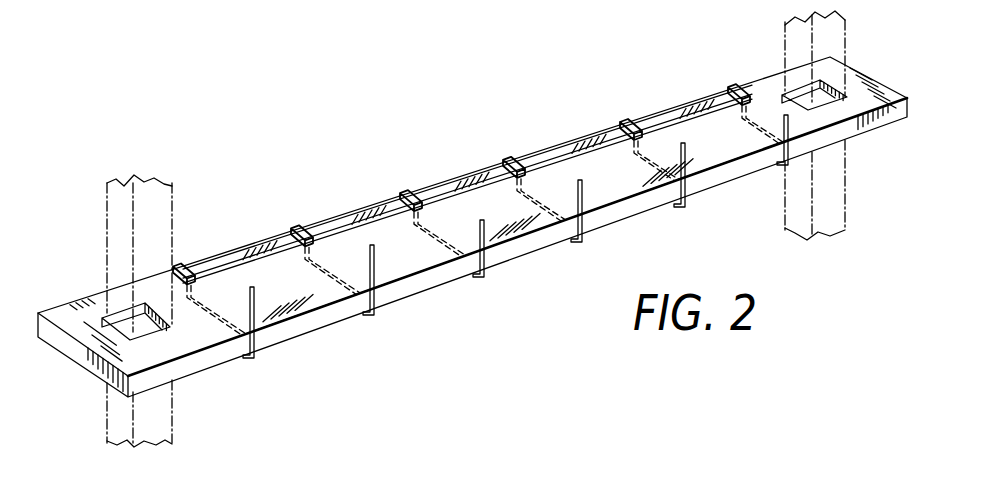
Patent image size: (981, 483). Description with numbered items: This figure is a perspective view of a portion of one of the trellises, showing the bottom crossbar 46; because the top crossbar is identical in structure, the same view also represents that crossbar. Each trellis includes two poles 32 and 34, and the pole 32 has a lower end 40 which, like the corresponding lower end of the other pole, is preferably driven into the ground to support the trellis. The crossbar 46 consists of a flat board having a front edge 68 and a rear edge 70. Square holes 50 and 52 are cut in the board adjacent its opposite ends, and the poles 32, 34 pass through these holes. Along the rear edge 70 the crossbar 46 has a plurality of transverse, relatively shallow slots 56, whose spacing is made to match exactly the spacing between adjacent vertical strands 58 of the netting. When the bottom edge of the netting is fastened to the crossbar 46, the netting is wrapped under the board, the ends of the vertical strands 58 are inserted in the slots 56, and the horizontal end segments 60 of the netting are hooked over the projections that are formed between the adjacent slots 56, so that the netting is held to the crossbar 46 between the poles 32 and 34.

The lower end 40 is at (97, 0).
The pole 32 is at (172, 168).
The pole 34 is at (842, 37).
The bottom crossbar 46 is at (470, 235).
The square hole 50 is at (106, 317).
The square hole 52 is at (843, 93).
The slot 56 is at (176, 267).
The vertical strand 58 is at (479, 263).
The horizontal end segment 60 is at (262, 247).
The front edge 68 is at (208, 364).
The rear edge 70 is at (80, 300).